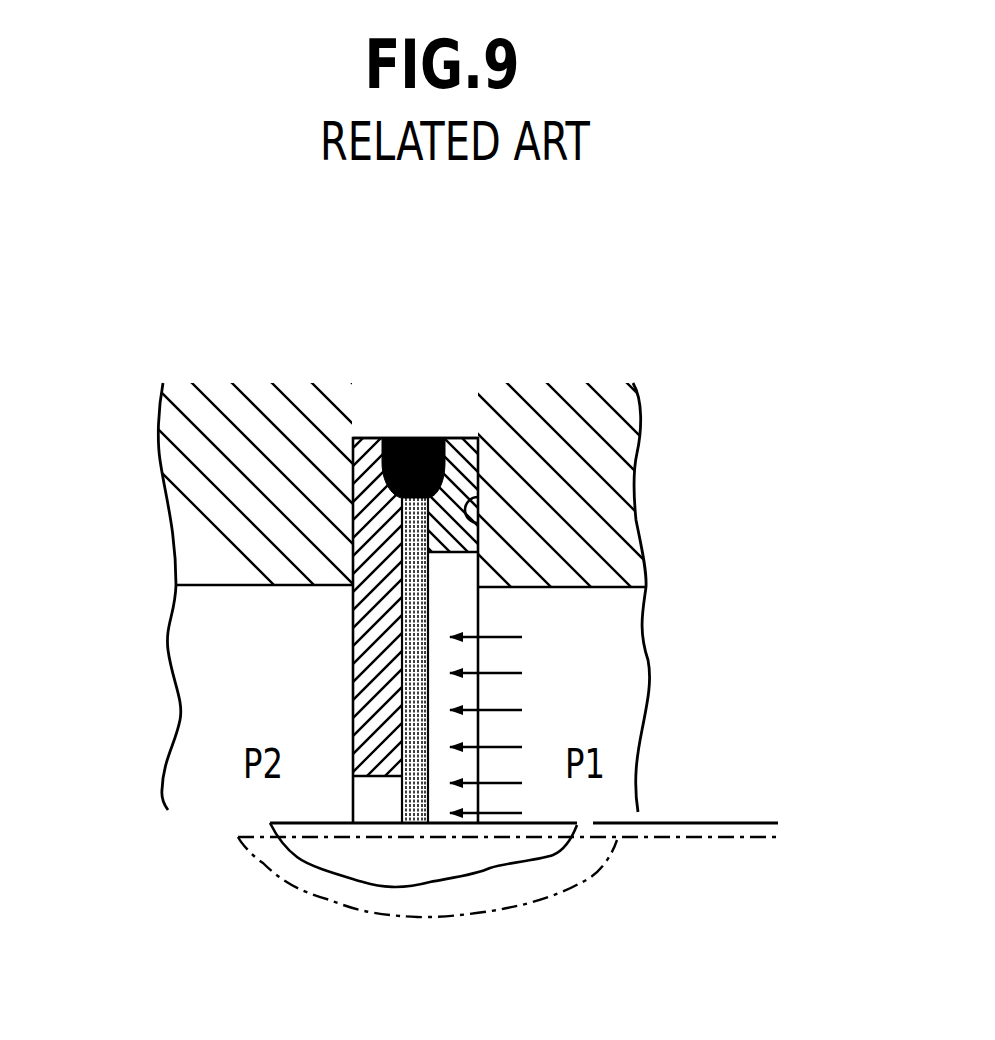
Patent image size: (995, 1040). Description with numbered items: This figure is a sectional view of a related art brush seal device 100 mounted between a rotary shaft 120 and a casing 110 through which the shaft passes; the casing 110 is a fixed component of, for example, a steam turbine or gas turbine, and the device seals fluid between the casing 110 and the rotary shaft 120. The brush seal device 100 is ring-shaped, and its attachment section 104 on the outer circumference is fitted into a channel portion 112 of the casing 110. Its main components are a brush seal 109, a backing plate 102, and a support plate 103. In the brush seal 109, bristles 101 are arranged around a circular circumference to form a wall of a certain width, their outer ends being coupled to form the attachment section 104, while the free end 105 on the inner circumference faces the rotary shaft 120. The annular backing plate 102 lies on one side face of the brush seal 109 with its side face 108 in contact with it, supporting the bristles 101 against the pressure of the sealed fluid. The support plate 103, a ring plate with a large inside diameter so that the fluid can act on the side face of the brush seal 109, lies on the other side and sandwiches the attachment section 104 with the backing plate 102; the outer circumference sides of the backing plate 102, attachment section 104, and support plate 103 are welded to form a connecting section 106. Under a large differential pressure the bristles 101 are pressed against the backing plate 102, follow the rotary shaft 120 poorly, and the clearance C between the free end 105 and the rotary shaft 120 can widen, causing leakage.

The brush seal device 100 is at (640, 357).
The bristles 101 is at (400, 638).
The backing plate 102 is at (377, 537).
The support plate 103 is at (478, 470).
The attachment section 104 is at (414, 437).
The free end 105 is at (412, 824).
The connecting section 106 is at (368, 437).
The side face 108 is at (428, 730).
The brush seal 109 is at (440, 598).
The casing 110 is at (617, 675).
The channel portion 112 is at (480, 540).
The rotary shaft 120 is at (432, 850).
The clearance C is at (750, 790).